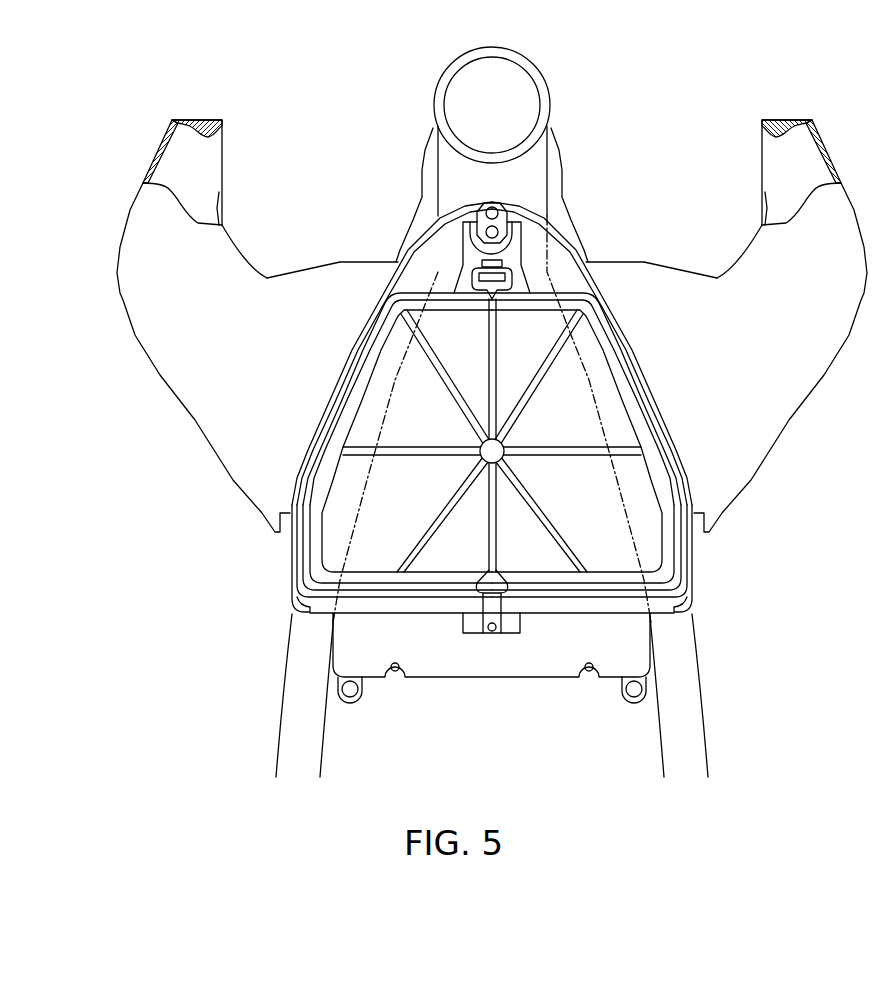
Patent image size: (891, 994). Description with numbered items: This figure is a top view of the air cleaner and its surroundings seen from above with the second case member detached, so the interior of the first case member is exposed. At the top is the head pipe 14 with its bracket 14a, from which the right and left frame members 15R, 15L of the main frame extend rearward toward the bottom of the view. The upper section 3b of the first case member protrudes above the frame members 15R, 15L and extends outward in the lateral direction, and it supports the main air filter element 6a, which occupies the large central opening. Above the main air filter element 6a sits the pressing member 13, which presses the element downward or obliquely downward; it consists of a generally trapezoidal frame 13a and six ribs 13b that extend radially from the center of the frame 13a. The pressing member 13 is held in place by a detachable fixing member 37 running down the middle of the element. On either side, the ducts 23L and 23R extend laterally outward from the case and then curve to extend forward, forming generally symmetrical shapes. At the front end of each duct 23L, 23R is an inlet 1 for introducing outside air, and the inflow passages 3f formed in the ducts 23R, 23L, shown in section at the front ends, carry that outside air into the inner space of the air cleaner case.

The inlet 1 is at (210, 156).
The upper section 3b is at (424, 256).
The inflow passage 3f is at (199, 181).
The main air filter element 6a is at (624, 555).
The pressing member 13 is at (569, 407).
The frame 13a is at (652, 452).
The ribs 13b is at (618, 452).
The head pipe 14 is at (538, 64).
The bracket 14a is at (553, 134).
The left frame member 15L is at (288, 680).
The right frame member 15R is at (697, 680).
The duct 23L is at (322, 262).
The duct 23R is at (662, 262).
The fixing member 37 is at (494, 341).